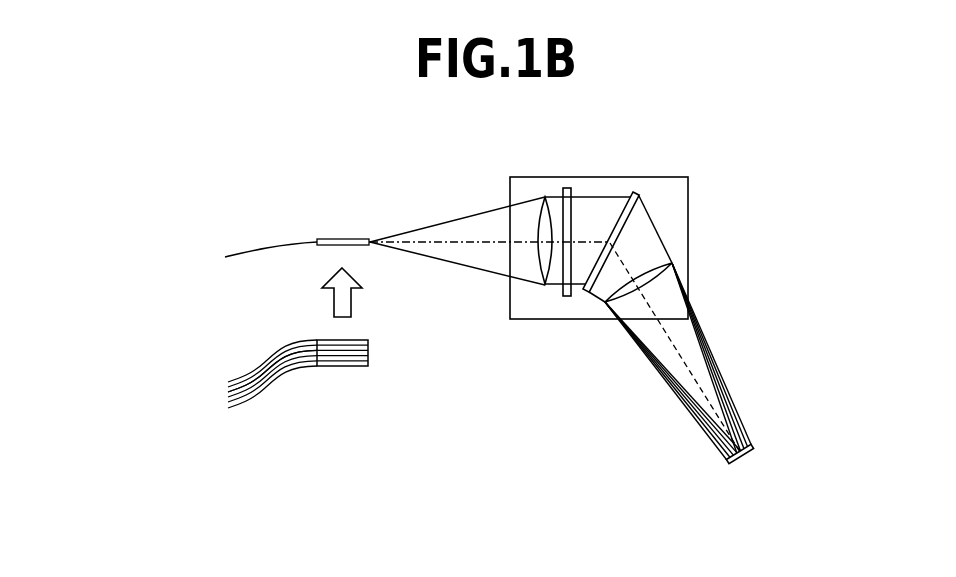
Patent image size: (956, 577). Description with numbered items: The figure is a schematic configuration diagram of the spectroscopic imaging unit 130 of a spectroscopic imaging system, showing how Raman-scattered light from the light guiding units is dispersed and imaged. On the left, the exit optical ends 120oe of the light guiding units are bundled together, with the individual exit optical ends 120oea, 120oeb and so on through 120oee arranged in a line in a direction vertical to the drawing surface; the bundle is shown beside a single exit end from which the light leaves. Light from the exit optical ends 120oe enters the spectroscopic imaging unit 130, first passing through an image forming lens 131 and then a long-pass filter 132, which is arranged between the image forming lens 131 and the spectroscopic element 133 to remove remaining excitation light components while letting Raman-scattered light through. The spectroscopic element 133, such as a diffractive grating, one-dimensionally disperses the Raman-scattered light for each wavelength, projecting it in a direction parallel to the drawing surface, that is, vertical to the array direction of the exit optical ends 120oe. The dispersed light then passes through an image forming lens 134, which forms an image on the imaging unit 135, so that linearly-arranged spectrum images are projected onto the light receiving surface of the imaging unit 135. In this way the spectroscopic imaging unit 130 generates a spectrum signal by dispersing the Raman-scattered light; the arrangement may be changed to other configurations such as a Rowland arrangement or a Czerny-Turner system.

The exit optical ends 120oe is at (345, 238).
The exit optical end 120oea is at (313, 414).
The exit optical end 120oeb is at (367, 419).
The exit optical end 120oee is at (427, 424).
The spectroscopic imaging unit 130 is at (596, 320).
The image forming lens 131 is at (545, 196).
The long-pass filter 132 is at (568, 297).
The spectroscopic element 133 is at (637, 191).
The image forming lens 134 is at (673, 263).
The imaging unit 135 is at (752, 446).